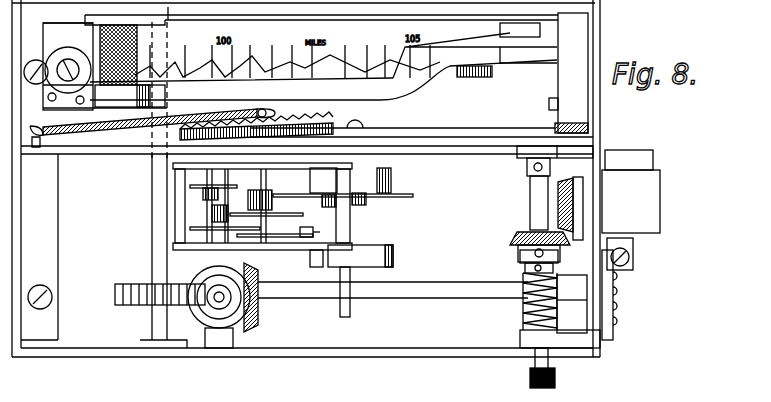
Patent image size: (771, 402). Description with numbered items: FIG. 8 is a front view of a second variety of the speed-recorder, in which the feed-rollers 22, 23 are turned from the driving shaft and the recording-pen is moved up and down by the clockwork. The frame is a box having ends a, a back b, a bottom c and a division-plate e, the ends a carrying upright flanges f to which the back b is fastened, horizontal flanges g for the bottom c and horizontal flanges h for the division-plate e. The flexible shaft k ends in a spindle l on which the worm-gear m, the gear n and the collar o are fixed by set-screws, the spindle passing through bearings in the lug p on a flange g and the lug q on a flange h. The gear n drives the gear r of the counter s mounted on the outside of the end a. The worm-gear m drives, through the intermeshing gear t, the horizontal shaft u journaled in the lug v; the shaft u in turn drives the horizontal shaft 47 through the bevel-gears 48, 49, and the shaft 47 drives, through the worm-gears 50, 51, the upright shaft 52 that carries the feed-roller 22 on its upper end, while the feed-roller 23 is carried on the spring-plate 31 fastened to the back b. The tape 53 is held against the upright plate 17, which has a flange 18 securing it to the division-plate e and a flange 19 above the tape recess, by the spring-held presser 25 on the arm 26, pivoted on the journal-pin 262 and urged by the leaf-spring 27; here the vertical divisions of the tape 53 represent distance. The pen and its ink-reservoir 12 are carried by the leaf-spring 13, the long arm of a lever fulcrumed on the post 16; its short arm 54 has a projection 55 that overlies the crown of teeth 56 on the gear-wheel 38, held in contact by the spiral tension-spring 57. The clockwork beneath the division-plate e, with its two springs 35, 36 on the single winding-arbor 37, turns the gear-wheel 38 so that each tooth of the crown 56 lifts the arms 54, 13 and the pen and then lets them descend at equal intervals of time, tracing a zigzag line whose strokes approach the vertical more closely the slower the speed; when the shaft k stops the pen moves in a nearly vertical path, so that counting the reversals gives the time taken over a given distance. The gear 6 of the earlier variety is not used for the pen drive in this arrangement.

The intermeshing gear 6 is at (580, 6).
The ink-reservoir 12 is at (522, 66).
The leaf-spring 13 is at (323, 66).
The post 16 is at (58, 66).
The upright plate 17 is at (421, 115).
The flange 18 is at (445, 133).
The flange 19 is at (470, 20).
The feed-roller 22 is at (160, 24).
The feed-roller 23 is at (147, 54).
The spring-held presser 25 is at (512, 44).
The arm 26 is at (573, 73).
The leaf-spring 27 is at (575, 100).
The spring-plate 31 is at (68, 14).
The spring 35 is at (392, 180).
The spring 36 is at (380, 248).
The winding-arbor 37 is at (350, 310).
The gear-wheel 38 is at (330, 135).
The horizontal shaft 47 is at (236, 332).
The bevel-gear 48 is at (259, 264).
The bevel-gear 49 is at (250, 312).
The worm-gear 50 is at (215, 293).
The worm-gear 51 is at (142, 286).
The upright shaft 52 is at (156, 229).
The tape 53 is at (286, 41).
The short arm 54 is at (277, 116).
The projection 55 is at (313, 125).
The crown of teeth 56 is at (351, 122).
The spiral tension-spring 57 is at (123, 136).
The journal-pin 262 is at (548, 111).
The ends a is at (595, 112).
The back b is at (424, 394).
The bottom c is at (358, 348).
The division-plate e is at (451, 161).
The upright flanges f is at (299, 173).
The horizontal flanges g is at (45, 348).
The horizontal flanges h is at (597, 148).
The flexible shaft k is at (550, 378).
The spindle l is at (530, 206).
The worm-gear m is at (524, 306).
The gear n is at (512, 238).
The collar o is at (527, 168).
The lug p is at (522, 333).
The lug q is at (520, 152).
The gear r is at (570, 201).
The counter s is at (631, 210).
The intermeshing gear t is at (393, 281).
The horizontal shaft u is at (414, 314).
The lug v is at (588, 296).